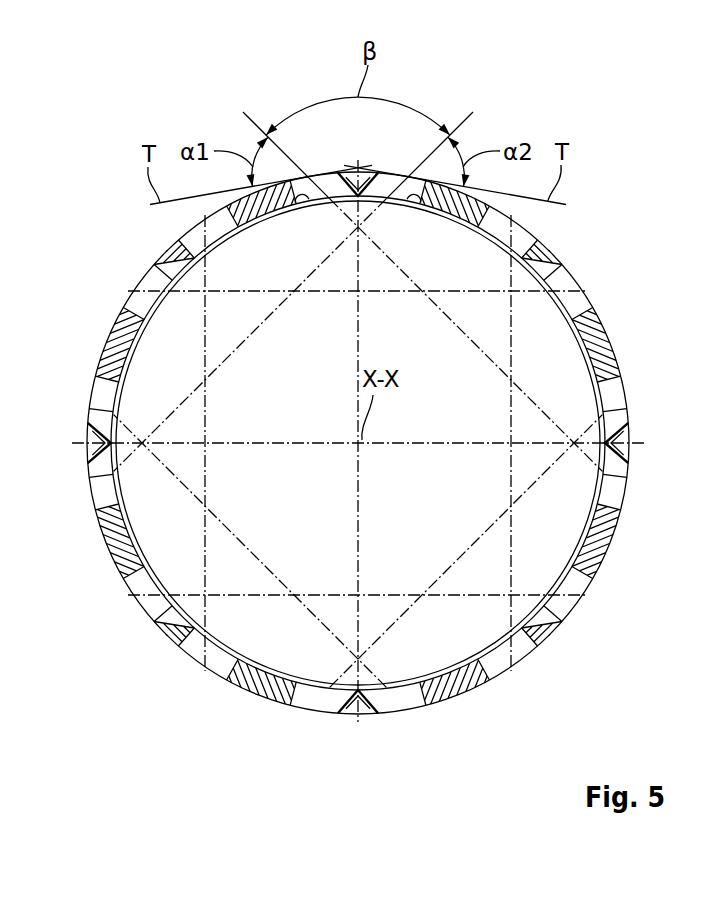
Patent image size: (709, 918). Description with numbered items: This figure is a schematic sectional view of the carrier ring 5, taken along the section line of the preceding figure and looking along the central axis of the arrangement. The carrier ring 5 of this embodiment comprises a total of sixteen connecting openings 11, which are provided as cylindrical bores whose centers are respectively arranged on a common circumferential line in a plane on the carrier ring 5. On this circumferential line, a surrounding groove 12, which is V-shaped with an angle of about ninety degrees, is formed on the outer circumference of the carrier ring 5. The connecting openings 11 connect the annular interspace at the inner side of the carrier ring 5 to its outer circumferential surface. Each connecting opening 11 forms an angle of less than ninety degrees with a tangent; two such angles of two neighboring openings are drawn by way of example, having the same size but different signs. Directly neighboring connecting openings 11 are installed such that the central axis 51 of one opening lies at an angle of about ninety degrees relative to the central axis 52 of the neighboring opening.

The carrier ring 5 is at (628, 90).
The connecting openings 11 is at (305, 207).
The surrounding groove 12 is at (605, 345).
The central axis 51 is at (258, 126).
The central axis 52 is at (458, 126).